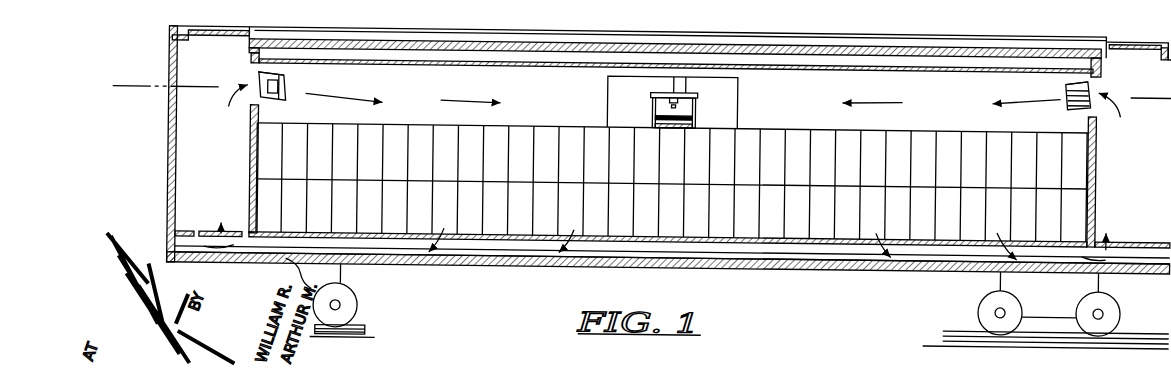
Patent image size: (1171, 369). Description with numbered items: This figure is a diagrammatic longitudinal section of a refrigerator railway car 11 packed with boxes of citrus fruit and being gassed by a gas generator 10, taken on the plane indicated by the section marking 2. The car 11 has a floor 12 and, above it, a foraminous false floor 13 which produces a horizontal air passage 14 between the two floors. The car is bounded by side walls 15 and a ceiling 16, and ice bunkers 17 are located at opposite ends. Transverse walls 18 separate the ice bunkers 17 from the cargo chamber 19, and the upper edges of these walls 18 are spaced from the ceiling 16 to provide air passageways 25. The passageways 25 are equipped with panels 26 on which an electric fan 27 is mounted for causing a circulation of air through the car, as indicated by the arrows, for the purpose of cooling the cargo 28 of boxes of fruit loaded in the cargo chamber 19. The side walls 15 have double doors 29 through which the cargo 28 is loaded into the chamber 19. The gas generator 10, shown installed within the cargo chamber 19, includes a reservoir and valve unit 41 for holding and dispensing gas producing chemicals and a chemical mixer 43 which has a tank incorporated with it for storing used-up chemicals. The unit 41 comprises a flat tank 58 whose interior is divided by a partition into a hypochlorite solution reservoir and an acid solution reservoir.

The plane 2—2 (section plane indicator) 2 is at (136, 89).
The gas generator 10 is at (697, 112).
The refrigerator railway car 11 is at (503, 269).
The floor 12 is at (800, 266).
The foraminous false floor 13 is at (843, 245).
The horizontal air passage 14 is at (953, 250).
The side walls 15 is at (848, 76).
The ceiling 16 is at (942, 69).
The ice bunkers 17 is at (182, 154).
The transverse walls 18 is at (250, 190).
The cargo chamber 19 is at (963, 104).
The air passageways 25 is at (255, 71).
The panels 26 is at (272, 76).
The electric fan 27 is at (277, 106).
The cargo 28 is at (800, 136).
The double doors 29 is at (607, 88).
The reservoir and valve unit 41 is at (688, 91).
The chemical mixer 43 is at (657, 120).
The flat tank 58 is at (655, 91).